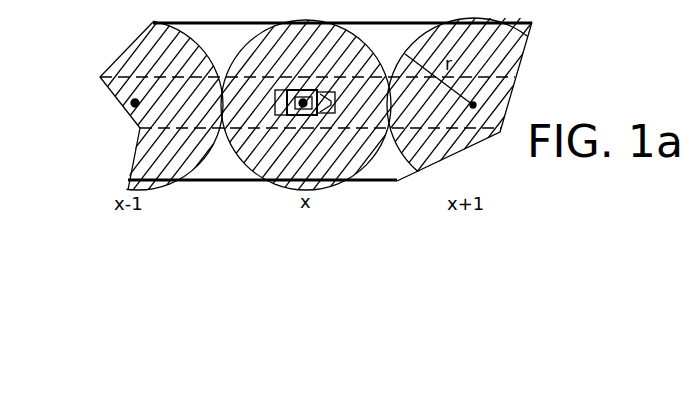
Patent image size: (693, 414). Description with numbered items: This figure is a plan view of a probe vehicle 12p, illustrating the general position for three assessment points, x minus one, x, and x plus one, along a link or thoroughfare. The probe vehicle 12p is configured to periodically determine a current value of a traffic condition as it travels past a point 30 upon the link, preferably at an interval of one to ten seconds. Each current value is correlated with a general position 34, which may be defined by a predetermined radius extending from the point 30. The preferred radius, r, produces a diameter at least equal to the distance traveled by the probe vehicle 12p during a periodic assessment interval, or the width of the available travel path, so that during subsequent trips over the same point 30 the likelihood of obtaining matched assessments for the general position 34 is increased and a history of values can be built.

The point 30 is at (134, 100).
The probe vehicle 12p is at (304, 90).
The general position 34 is at (316, 165).